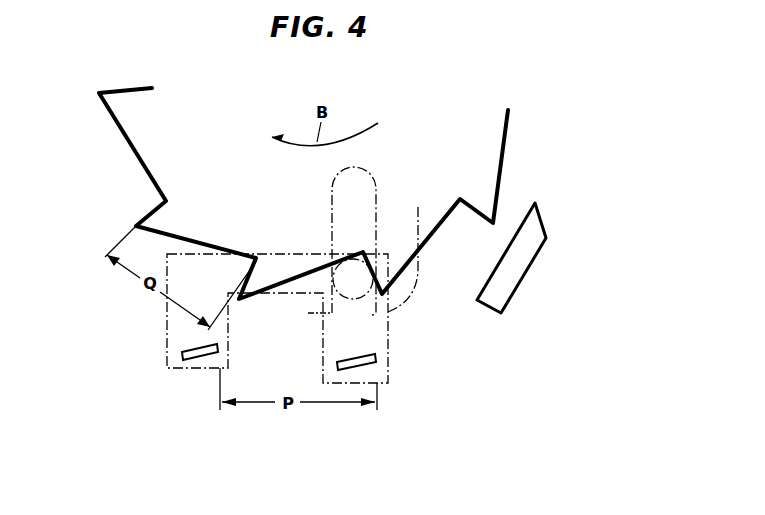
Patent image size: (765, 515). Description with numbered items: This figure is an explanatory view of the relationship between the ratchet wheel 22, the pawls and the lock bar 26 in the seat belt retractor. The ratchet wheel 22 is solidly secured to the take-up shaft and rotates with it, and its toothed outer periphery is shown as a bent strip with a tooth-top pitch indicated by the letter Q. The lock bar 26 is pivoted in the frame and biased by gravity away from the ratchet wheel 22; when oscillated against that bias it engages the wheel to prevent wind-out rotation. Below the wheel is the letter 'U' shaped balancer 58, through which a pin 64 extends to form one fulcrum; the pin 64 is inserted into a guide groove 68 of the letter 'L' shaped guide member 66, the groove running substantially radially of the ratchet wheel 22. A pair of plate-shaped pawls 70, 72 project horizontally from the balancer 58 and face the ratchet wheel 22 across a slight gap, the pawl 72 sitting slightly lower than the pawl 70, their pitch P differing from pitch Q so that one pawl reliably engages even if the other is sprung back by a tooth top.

The ratchet wheel 22 is at (503, 172).
The lock bar 26 is at (523, 280).
The balancer 58 is at (388, 370).
The pin 64 is at (343, 300).
The guide member 66 is at (418, 268).
The guide groove 68 is at (376, 214).
The pawl 70 is at (197, 360).
The pawl 72 is at (360, 357).